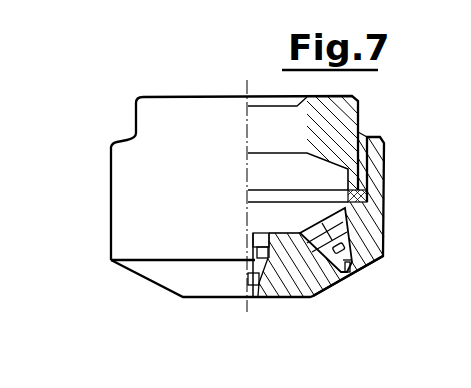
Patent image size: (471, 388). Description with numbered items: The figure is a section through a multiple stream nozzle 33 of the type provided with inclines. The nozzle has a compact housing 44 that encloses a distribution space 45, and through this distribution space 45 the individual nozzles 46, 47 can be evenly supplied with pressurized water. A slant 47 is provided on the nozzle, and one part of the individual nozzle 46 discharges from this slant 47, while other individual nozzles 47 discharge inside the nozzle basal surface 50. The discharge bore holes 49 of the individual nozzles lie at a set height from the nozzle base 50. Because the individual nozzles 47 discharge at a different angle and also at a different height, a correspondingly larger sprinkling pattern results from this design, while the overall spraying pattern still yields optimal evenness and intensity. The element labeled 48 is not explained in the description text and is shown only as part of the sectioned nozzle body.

The multiple stream nozzle 33 is at (128, 217).
The housing 44 is at (162, 113).
The distribution space 45 is at (312, 198).
The individual nozzle 46 is at (402, 203).
The slant 47 is at (255, 263).
The chamfered bottom surface 48 is at (328, 293).
The discharge bore hole 49 is at (347, 277).
The nozzle base 50 is at (278, 298).